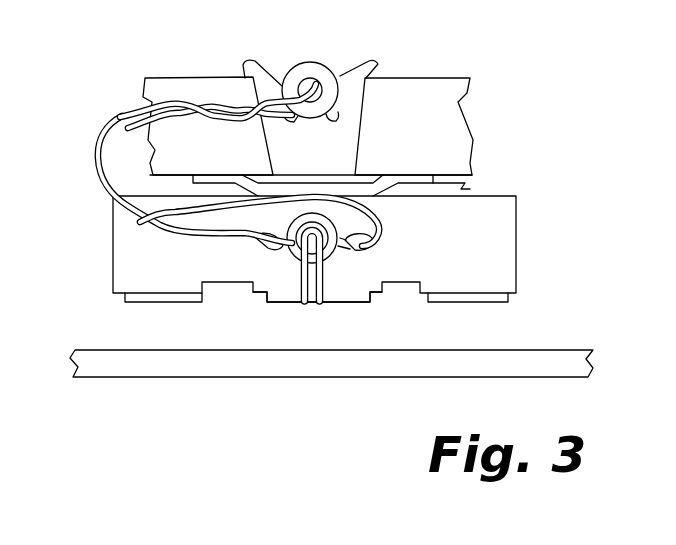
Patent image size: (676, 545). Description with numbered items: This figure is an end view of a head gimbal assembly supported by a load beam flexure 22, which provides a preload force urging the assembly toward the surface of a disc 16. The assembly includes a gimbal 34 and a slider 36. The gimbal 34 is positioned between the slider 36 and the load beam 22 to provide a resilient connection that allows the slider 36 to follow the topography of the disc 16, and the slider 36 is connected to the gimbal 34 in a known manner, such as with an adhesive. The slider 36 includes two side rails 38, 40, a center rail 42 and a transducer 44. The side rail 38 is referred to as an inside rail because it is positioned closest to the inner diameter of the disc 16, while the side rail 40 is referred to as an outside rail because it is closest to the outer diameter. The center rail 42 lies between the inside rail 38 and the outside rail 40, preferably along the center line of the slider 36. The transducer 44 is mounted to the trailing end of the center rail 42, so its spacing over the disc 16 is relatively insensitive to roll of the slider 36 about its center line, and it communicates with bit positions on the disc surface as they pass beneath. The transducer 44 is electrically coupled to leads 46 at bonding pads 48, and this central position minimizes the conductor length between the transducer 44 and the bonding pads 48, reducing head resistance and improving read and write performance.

The disc 16 is at (232, 350).
The load beam flexure 22 is at (429, 78).
The gimbal 34 is at (470, 191).
The slider 36 is at (517, 238).
The side rail 38 is at (490, 302).
The side rail 40 is at (137, 301).
The center rail 42 is at (336, 303).
The transducer 44 is at (311, 303).
The leads 46 is at (117, 130).
The bonding pads 48 is at (253, 248).